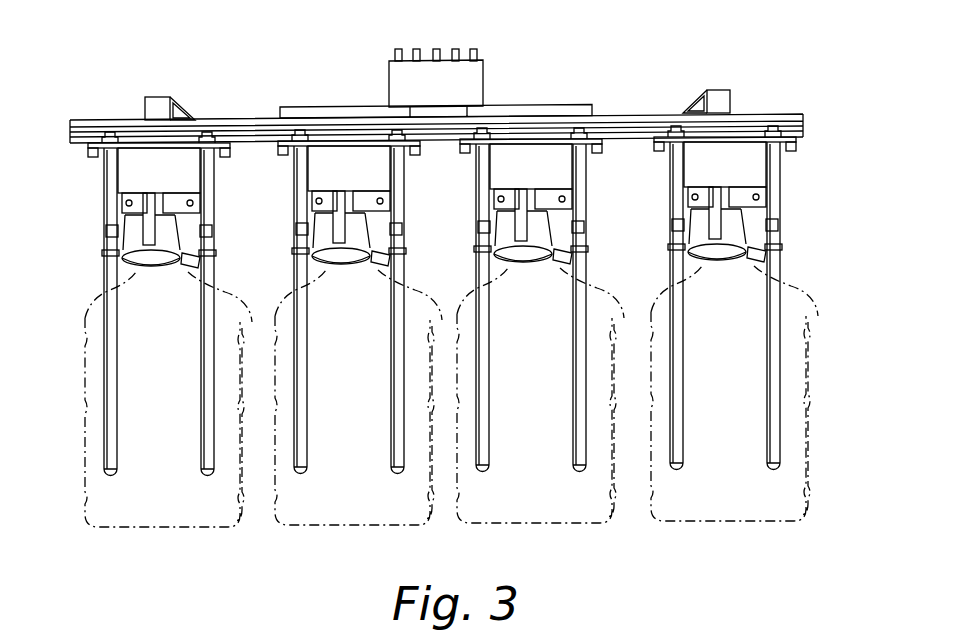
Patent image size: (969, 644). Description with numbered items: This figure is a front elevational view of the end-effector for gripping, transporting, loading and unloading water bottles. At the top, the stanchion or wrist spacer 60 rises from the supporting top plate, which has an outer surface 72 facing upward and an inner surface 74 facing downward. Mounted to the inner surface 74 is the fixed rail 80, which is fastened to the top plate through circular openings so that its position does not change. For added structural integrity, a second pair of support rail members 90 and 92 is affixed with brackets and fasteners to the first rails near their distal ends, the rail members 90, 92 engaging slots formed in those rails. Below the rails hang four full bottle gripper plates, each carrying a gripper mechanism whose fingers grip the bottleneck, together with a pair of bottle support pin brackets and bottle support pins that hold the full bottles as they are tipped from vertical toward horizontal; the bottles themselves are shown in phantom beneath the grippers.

The wrist spacer 60 is at (389, 92).
The outer surface 72 is at (531, 107).
The inner surface 74 is at (262, 139).
The fixed rail 80 is at (72, 128).
The second support rail member 90 is at (152, 97).
The second support rail member 92 is at (728, 98).